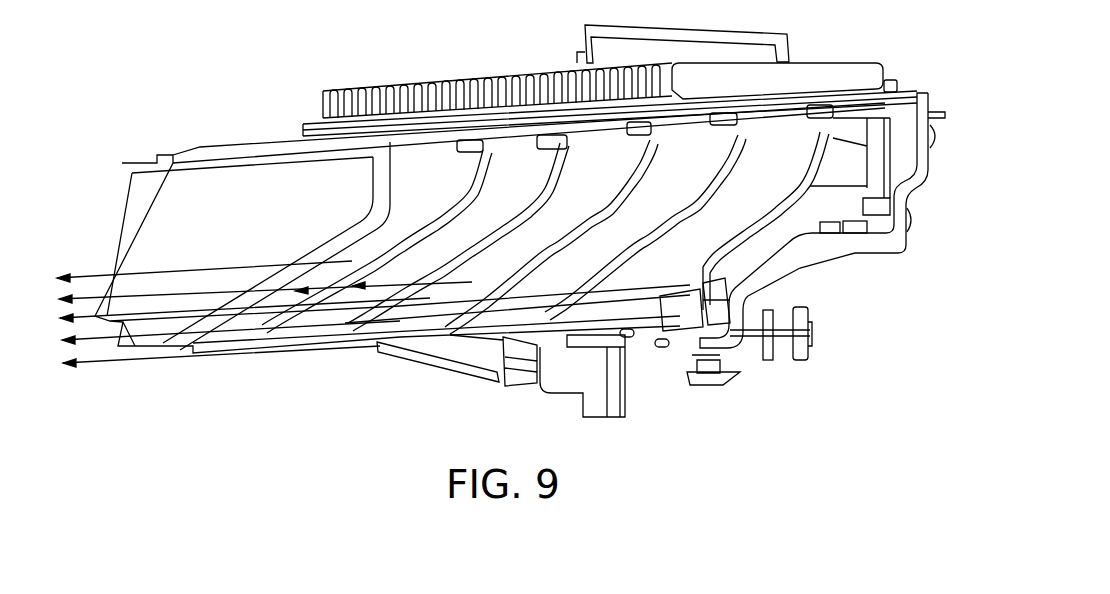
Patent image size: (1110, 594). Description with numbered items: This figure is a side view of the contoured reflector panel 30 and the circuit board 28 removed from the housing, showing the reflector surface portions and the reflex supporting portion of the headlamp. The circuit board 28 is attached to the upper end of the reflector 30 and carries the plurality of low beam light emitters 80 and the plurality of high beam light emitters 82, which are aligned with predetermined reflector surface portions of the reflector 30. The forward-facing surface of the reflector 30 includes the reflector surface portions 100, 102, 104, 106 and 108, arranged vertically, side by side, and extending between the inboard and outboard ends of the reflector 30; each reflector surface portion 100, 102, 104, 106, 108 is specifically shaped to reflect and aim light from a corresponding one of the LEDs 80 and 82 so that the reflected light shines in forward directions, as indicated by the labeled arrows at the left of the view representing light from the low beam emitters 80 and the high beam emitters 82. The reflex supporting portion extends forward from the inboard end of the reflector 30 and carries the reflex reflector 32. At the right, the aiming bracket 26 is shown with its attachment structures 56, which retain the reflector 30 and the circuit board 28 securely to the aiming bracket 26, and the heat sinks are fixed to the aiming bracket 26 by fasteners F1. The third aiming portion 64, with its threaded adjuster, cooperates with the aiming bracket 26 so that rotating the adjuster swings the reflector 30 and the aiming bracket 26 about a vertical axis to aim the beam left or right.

The aiming bracket 26 is at (900, 196).
The circuit board 28 is at (387, 101).
The contoured reflector panel 30 is at (705, 168).
The reflex reflector 32 is at (214, 188).
The attachment structures 56 is at (920, 148).
The third aiming portion 64 is at (805, 352).
The low beam light emitters 80 is at (192, 310).
The high beam light emitters 82 is at (148, 293).
The reflector surface portion 100 is at (787, 152).
The reflector surface portion 102 is at (688, 152).
The reflector surface portion 104 is at (607, 157).
The reflector surface portion 106 is at (518, 174).
The reflector surface portion 108 is at (440, 176).
The fasteners F1 is at (930, 250).